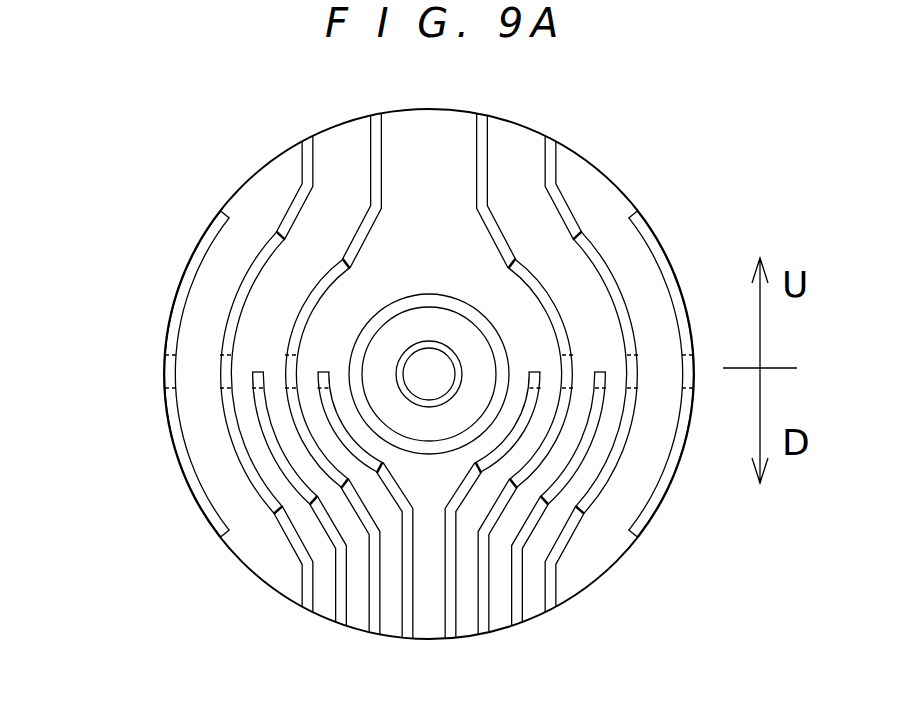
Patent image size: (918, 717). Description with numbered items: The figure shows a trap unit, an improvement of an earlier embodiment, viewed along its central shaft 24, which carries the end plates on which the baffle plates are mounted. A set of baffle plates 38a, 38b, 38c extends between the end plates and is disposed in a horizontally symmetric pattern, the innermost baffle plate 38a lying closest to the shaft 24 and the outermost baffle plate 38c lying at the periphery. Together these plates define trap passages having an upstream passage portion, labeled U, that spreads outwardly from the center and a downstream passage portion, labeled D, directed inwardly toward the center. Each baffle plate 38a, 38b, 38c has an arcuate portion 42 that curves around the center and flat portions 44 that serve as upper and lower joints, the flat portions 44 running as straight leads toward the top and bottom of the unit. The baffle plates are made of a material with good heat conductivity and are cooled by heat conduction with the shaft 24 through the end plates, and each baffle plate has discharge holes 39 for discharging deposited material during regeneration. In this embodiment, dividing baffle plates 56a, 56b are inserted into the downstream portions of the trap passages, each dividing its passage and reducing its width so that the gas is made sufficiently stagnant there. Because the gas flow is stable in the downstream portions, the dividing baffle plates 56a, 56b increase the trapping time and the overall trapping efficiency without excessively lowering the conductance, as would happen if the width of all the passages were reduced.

The shaft 24 is at (357, 350).
The baffle plate 38a is at (527, 265).
The baffle plate 38b is at (603, 263).
The baffle plate 38c is at (667, 270).
The discharge hole 39 is at (171, 369).
The arcuate portion 42 is at (313, 298).
The flat portion 44 is at (275, 370).
The dividing baffle plate 56a is at (503, 443).
The dividing baffle plate 56b is at (568, 470).